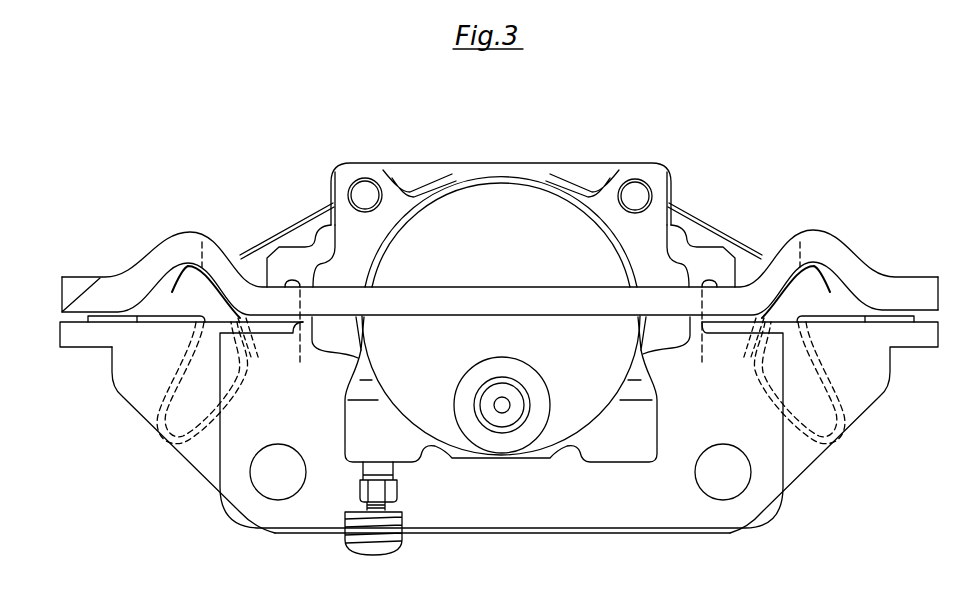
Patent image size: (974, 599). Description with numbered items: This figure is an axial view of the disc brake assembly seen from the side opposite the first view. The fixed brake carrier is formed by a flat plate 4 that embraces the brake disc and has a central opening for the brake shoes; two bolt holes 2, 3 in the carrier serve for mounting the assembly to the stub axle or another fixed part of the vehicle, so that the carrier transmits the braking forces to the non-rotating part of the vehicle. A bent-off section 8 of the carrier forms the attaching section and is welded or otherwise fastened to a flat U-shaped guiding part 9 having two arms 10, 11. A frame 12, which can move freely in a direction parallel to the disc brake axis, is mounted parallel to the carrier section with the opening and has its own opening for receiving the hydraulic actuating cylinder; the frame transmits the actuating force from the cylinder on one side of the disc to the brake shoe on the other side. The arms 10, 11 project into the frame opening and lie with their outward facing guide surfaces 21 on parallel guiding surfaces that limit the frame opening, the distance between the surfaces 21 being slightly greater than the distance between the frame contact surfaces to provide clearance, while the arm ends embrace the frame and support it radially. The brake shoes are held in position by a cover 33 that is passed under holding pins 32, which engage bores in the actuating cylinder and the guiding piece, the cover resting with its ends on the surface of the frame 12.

The bolt hole 2 is at (292, 490).
The bolt hole 3 is at (709, 484).
The flat plate 4 is at (82, 345).
The bent-off section 8 is at (132, 388).
The U-shaped guiding part 9 is at (230, 445).
The arm 10 is at (293, 252).
The arm 11 is at (692, 258).
The frame 12 is at (343, 308).
The guide surfaces 21 is at (300, 347).
The holding pins 32 is at (636, 190).
The cover 33 is at (738, 238).